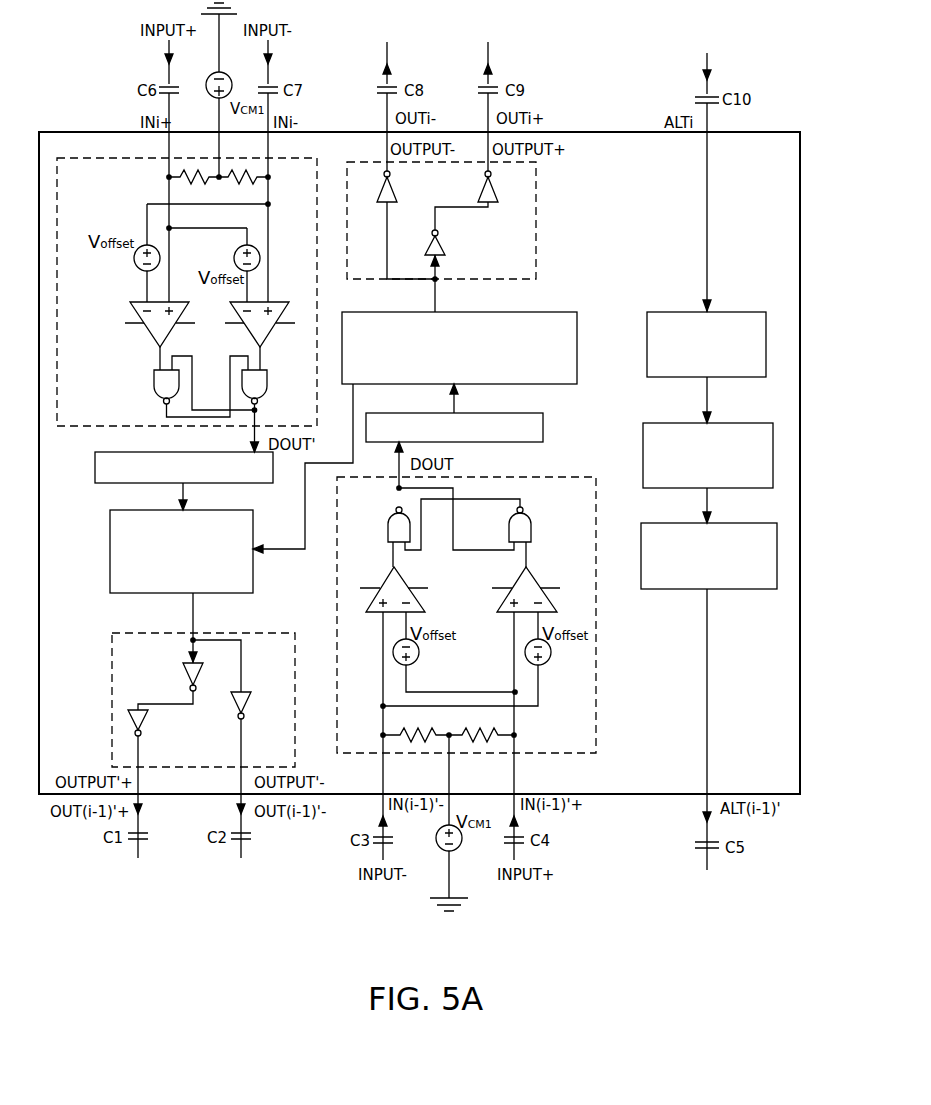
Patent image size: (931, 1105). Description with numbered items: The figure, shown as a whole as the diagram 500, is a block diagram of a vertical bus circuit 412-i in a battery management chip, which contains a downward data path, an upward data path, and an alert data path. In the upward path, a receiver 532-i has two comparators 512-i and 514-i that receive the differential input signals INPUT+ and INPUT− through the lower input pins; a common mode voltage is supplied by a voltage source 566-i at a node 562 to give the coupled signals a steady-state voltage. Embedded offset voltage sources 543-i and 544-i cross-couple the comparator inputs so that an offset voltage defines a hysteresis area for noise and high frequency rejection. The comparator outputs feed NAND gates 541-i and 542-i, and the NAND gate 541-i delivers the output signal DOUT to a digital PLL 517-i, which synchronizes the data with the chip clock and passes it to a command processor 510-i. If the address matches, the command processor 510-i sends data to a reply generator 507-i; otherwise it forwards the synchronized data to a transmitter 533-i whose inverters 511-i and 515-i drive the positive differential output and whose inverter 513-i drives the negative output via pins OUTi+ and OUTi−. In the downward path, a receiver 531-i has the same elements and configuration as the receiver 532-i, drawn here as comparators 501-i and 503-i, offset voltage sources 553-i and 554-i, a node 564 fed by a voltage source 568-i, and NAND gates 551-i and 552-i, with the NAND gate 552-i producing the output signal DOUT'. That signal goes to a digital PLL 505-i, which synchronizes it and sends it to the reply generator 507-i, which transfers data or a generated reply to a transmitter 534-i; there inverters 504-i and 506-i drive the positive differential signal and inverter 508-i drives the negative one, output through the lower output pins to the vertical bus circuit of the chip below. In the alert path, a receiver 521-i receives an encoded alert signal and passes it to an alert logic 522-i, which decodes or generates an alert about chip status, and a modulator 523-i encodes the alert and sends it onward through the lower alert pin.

The circuit system 500 is at (114, 56).
The vertical bus circuit 412-i is at (745, 132).
The common mode voltage source VCM1 568-i is at (209, 77).
The receiver 531-i is at (322, 162).
The termination resistor 564 is at (218, 185).
The offset voltage source 554-i is at (134, 264).
The offset voltage source 553-i is at (236, 256).
The comparator 501-i is at (181, 318).
The comparator 503-i is at (281, 318).
The NAND gate 551-i is at (154, 389).
The NAND gate 552-i is at (267, 379).
The digital phase-locked loop 505-i is at (184, 467).
The reply generator 507-i is at (181, 551).
The transmitter 534-i is at (240, 633).
The inverter 504-i is at (184, 672).
The inverter 506-i is at (145, 720).
The inverter 508-i is at (246, 700).
The transmitter 533-i is at (536, 175).
The inverter 513-i is at (380, 197).
The inverter 515-i is at (481, 197).
The inverter 511-i is at (444, 240).
The command processor 510-i is at (577, 327).
The digital phase-locked loop 517-i is at (454, 427).
The receiver 532-i is at (596, 612).
The NAND gate 541-i is at (388, 516).
The NAND gate 542-i is at (531, 519).
The comparator 514-i is at (389, 568).
The comparator 512-i is at (519, 570).
The voltage source 543-i is at (419, 662).
The voltage source 544-i is at (551, 662).
The node 562 is at (448, 728).
The voltage source 566-i is at (462, 843).
The receiver 521-i is at (706, 344).
The alert logic 522-i is at (708, 455).
The modulator 523-i is at (709, 556).